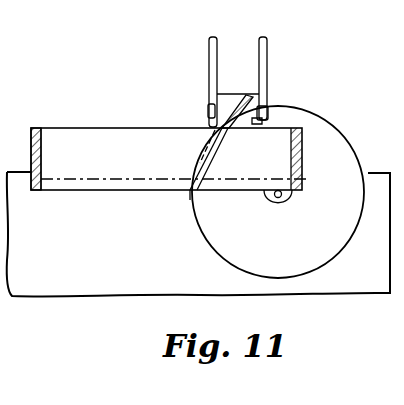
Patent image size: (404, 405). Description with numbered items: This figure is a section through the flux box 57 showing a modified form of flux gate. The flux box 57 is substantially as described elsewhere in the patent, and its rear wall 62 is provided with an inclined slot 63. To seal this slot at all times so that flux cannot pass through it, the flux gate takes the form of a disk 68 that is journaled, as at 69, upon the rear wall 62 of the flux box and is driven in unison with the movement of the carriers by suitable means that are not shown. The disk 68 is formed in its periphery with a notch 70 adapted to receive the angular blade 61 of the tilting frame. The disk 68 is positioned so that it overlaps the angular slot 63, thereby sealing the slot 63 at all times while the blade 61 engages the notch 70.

The flux box 57 is at (41, 145).
The angular blade 61 is at (237, 102).
The rear wall 62 is at (147, 140).
The inclined slot 63 is at (205, 163).
The disk 68 is at (312, 123).
The journal 69 is at (277, 200).
The notch 70 is at (255, 122).